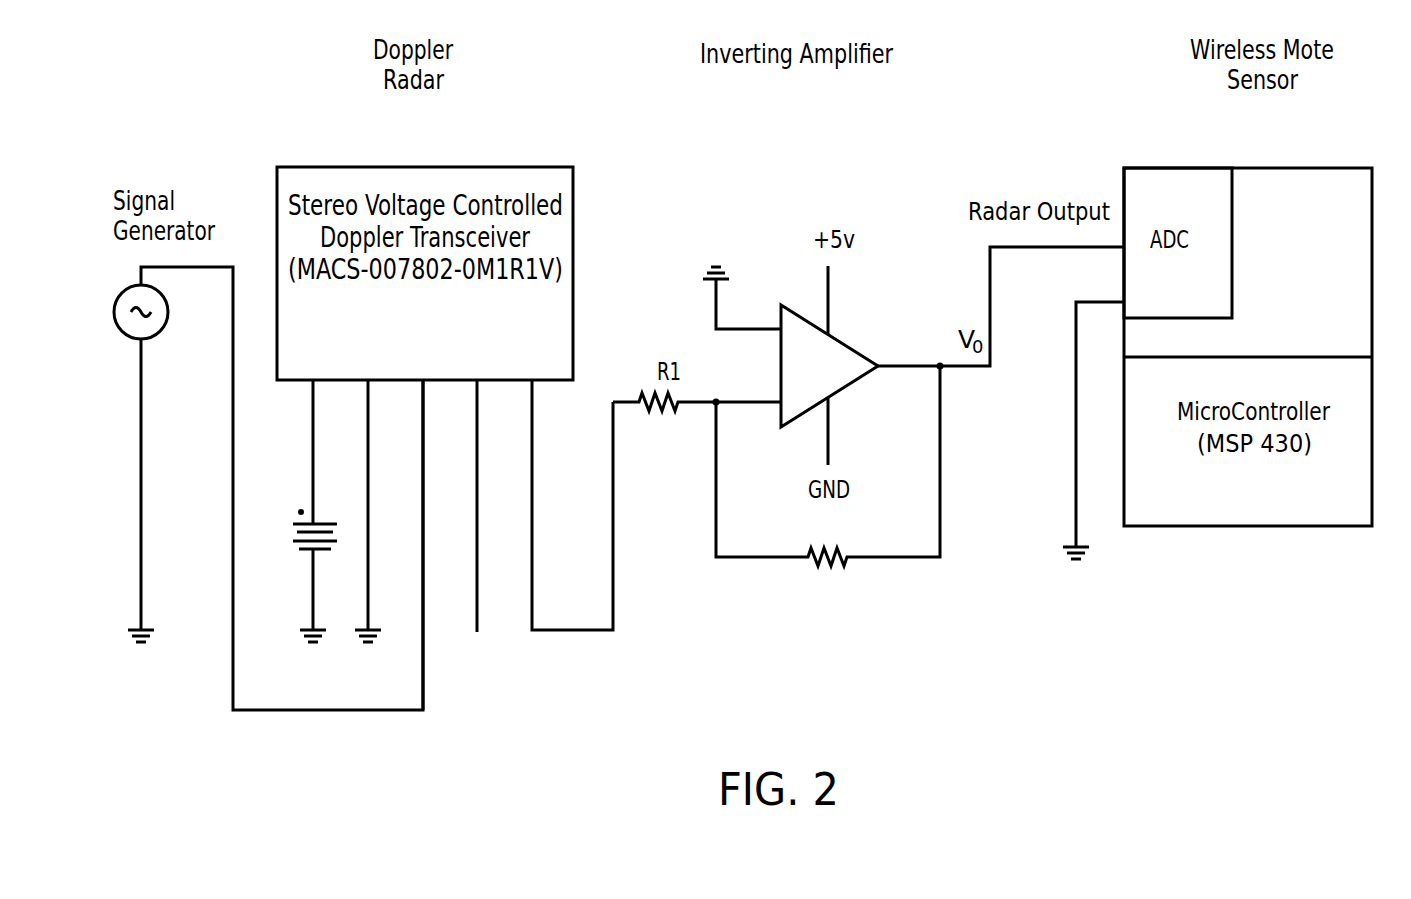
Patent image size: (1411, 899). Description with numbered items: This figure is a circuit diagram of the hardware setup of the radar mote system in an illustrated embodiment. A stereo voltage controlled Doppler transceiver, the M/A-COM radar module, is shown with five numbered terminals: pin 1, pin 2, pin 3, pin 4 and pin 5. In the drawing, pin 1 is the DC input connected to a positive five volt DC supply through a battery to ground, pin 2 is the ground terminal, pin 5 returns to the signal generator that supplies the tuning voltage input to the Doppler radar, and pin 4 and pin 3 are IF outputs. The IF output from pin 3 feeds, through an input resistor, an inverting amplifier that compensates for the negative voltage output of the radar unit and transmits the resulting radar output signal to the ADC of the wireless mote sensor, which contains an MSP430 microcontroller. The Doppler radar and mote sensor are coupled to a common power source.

The pin 1 (DC input) 1 is at (308, 525).
The pin 2 (GND) 2 is at (371, 512).
The pin 3 (IF output) 3 is at (568, 526).
The pin 4 (IF output) 4 is at (480, 526).
The pin 5 (DC input return) 5 is at (422, 528).